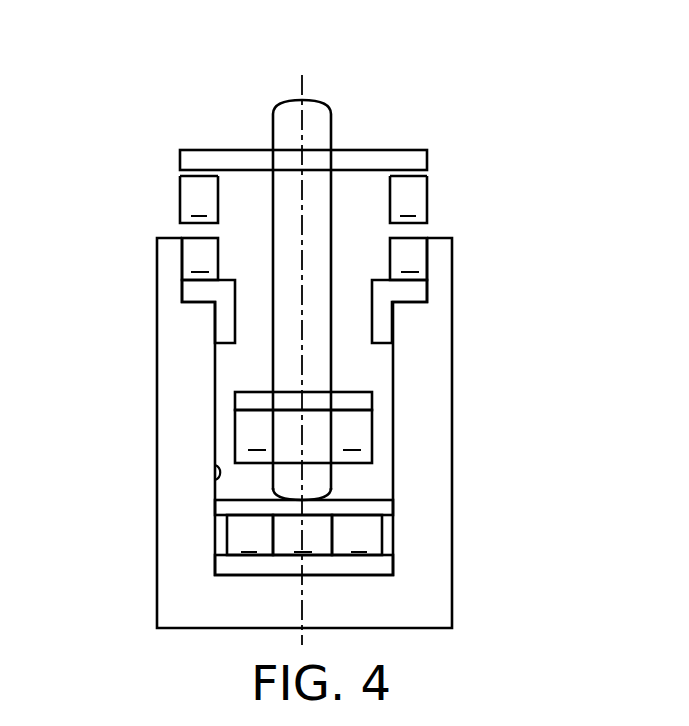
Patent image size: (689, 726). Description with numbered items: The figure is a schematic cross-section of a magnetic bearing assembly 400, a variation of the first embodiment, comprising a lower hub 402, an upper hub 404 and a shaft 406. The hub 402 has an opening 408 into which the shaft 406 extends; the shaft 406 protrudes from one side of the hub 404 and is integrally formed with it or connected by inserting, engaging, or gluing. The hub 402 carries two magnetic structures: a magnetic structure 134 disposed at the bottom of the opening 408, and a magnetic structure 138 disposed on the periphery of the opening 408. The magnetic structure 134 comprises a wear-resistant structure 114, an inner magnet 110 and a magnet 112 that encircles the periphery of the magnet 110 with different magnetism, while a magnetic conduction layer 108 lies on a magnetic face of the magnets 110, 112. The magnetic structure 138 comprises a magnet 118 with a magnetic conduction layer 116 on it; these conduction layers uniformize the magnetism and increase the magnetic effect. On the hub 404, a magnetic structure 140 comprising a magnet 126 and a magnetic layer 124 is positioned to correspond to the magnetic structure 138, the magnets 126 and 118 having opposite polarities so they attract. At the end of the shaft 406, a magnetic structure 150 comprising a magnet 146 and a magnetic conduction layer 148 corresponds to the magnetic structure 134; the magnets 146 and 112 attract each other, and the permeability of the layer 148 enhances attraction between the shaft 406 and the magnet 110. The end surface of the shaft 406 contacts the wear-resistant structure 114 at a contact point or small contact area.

The magnetic bearing assembly 400 is at (60, 87).
The hub 402 is at (170, 412).
The hub 404 is at (180, 162).
The shaft 406 is at (318, 132).
The opening 408 is at (215, 480).
The magnetic layer 124 is at (427, 168).
The magnet 126 is at (427, 200).
The magnetic structure 140 is at (389, 190).
The magnet 118 is at (427, 255).
The magnetic conduction layer 116 is at (385, 318).
The magnetic structure 138 is at (390, 290).
The magnetic conduction layer 148 is at (362, 402).
The magnet 146 is at (367, 435).
The magnetic structure 150 is at (417, 422).
The wear-resistant structure 114 is at (365, 508).
The magnet 110 is at (323, 527).
The magnet 112 is at (392, 545).
The magnetic conduction layer 108 is at (369, 571).
The magnetic structure 134 is at (407, 526).